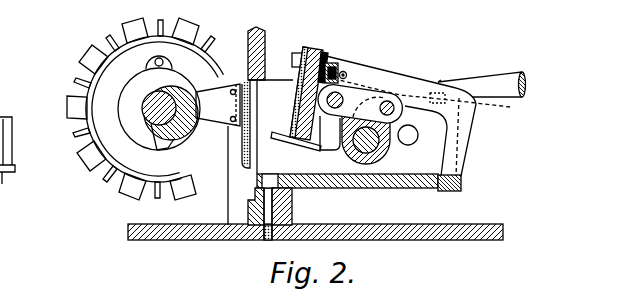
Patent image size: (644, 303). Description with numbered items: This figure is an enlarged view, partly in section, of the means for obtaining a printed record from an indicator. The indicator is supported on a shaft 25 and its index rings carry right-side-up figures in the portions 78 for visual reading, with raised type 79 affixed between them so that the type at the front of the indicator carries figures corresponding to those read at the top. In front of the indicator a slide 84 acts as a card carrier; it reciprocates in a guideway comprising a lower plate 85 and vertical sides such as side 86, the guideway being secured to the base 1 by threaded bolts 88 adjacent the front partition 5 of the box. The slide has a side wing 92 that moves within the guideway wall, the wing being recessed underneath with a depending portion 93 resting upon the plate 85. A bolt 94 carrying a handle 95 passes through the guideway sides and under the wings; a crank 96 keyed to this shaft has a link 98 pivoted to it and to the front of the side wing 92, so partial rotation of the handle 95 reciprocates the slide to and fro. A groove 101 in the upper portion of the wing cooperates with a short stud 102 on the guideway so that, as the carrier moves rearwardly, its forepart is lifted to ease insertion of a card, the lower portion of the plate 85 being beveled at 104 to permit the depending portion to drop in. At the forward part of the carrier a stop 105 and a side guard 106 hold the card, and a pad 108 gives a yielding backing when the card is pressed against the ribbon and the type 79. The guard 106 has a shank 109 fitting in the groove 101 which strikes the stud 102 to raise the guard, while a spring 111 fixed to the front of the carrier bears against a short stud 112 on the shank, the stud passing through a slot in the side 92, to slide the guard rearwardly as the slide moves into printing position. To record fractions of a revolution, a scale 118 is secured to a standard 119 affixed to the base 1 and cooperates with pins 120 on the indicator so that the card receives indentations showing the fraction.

The base 1 is at (188, 240).
The front partition 5 is at (266, 38).
The shaft 25 is at (160, 120).
The portions for visual figures 78 is at (84, 143).
The raised type 79 is at (190, 23).
The slide 84 is at (318, 66).
The lower plate 85 is at (382, 188).
The vertical side 86 is at (272, 83).
The threaded bolt 88 is at (293, 207).
The side wing 92 is at (409, 88).
The depending portion 93 is at (467, 131).
The bolt 94 is at (353, 150).
The handle 95 is at (526, 81).
The crank 96 is at (380, 155).
The link 98 is at (355, 92).
The groove 101 is at (478, 106).
The short stud 102 is at (441, 80).
The bevel 104 is at (442, 188).
The stop 105 is at (281, 137).
The side guard 106 is at (304, 50).
The pad 108 is at (292, 120).
The shank 109 is at (437, 93).
The spring 111 is at (333, 66).
The short stud 112 is at (345, 72).
The scale 118 is at (218, 105).
The standard 119 is at (232, 208).
The pin 120 is at (160, 22).